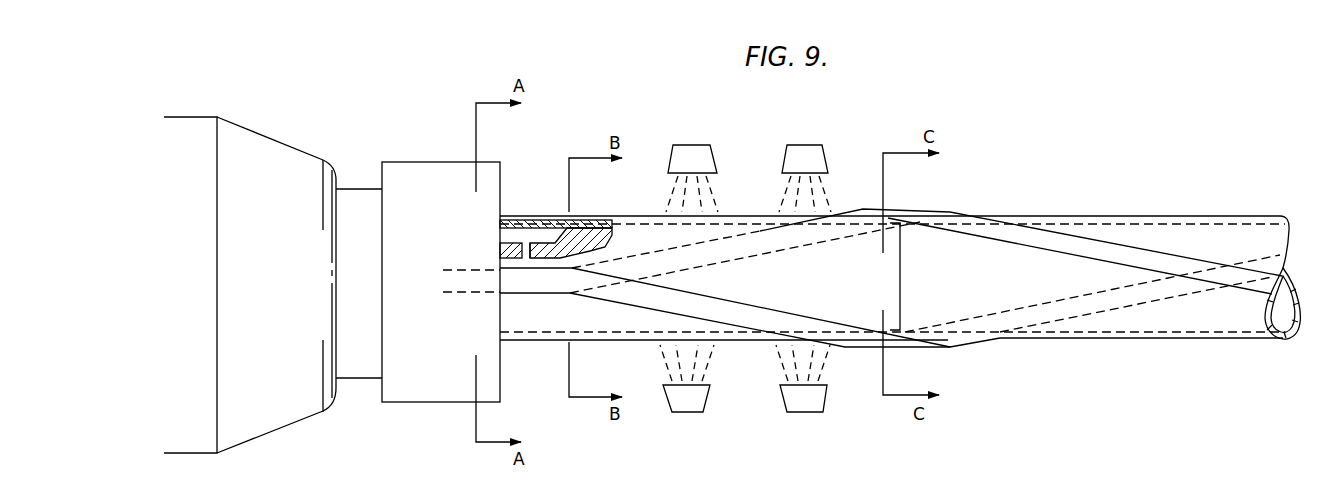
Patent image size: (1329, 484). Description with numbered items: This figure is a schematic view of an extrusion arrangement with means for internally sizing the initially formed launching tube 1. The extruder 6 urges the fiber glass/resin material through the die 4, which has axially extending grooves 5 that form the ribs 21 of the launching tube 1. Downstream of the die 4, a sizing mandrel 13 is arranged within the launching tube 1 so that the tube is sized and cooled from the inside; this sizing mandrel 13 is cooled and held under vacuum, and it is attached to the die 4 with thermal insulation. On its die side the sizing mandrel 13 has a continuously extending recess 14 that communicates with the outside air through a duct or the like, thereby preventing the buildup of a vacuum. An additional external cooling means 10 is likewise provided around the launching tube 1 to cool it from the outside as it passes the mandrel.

The launching tube 1 is at (540, 342).
The die 4 is at (432, 172).
The axially extending grooves 5 is at (482, 283).
The extruder 6 is at (257, 413).
The external cooling means 10 is at (793, 397).
The sizing mandrel 13 is at (580, 238).
The recess 14 is at (522, 235).
The ribs 21 is at (946, 217).